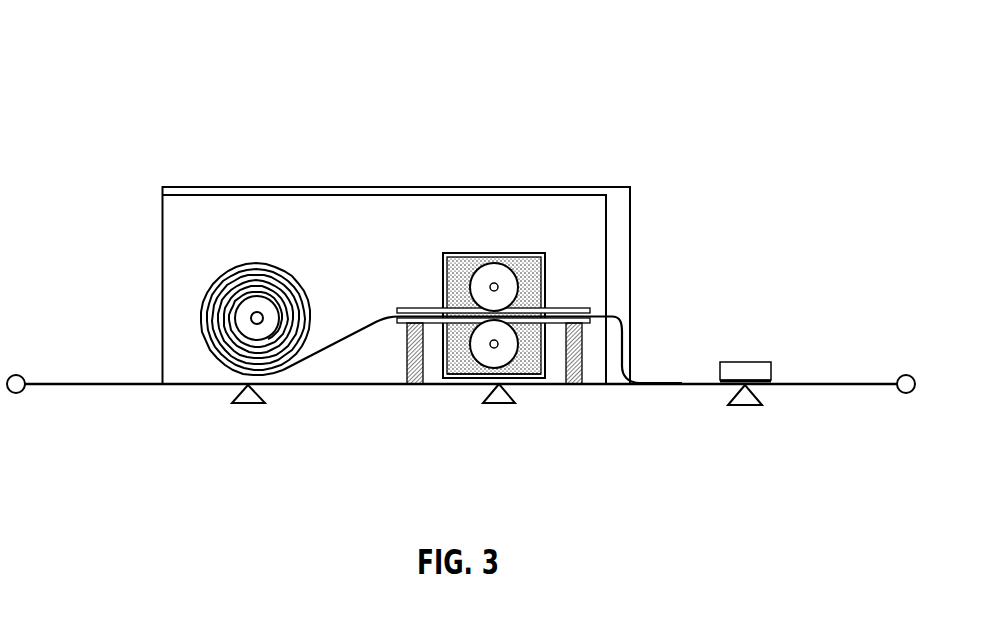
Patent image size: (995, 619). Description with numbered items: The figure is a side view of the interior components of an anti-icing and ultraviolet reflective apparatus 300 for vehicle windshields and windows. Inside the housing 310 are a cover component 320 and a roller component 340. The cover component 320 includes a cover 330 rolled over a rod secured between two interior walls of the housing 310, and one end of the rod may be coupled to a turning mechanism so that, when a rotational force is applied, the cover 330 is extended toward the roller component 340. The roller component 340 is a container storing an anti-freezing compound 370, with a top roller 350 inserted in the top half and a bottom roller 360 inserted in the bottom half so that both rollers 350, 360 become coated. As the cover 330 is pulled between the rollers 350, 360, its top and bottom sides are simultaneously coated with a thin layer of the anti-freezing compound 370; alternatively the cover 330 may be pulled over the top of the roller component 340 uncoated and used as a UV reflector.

The anti-icing and ultraviolet reflective apparatus 300 is at (115, 82).
The housing 310 is at (177, 277).
The cover component 320 is at (207, 318).
The cover 330 is at (350, 330).
The roller component 340 is at (547, 272).
The roller 350 is at (473, 287).
The roller 360 is at (473, 360).
The anti-freezing compound 370 is at (535, 363).